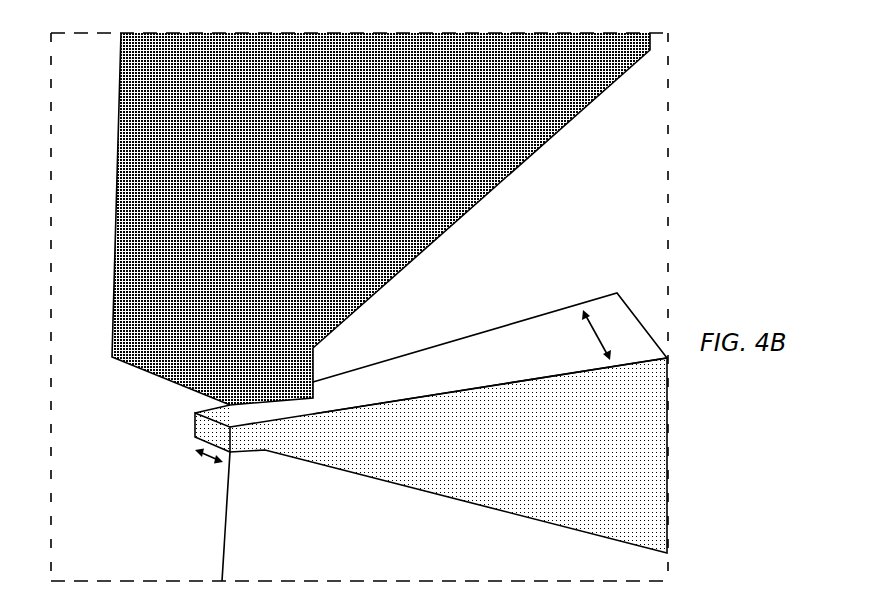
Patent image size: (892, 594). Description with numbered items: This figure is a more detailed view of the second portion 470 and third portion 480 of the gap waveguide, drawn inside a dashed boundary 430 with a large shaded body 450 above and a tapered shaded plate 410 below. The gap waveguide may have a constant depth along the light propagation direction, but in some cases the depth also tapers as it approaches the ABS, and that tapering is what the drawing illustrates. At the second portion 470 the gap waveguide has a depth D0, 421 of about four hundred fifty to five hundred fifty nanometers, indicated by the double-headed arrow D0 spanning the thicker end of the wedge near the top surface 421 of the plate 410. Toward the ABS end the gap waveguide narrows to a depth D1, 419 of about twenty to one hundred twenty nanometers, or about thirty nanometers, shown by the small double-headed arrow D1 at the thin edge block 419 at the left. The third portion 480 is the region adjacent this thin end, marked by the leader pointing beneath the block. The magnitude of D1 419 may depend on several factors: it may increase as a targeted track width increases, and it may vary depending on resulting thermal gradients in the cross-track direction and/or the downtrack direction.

The substrate / base layer 410 is at (655, 460).
The gap waveguide depth D1 at the ABS end 419 is at (186, 490).
The gap waveguide depth D0 at the first portion 421 is at (567, 349).
The dashed boundary region 430 is at (108, 38).
The upper body / mask layer 450 is at (498, 33).
The second portion of the gap waveguide 470 is at (483, 345).
The third portion of the gap waveguide 480 is at (252, 470).
The gap waveguide depth D0 is at (589, 335).
The gap waveguide depth D1 is at (204, 468).